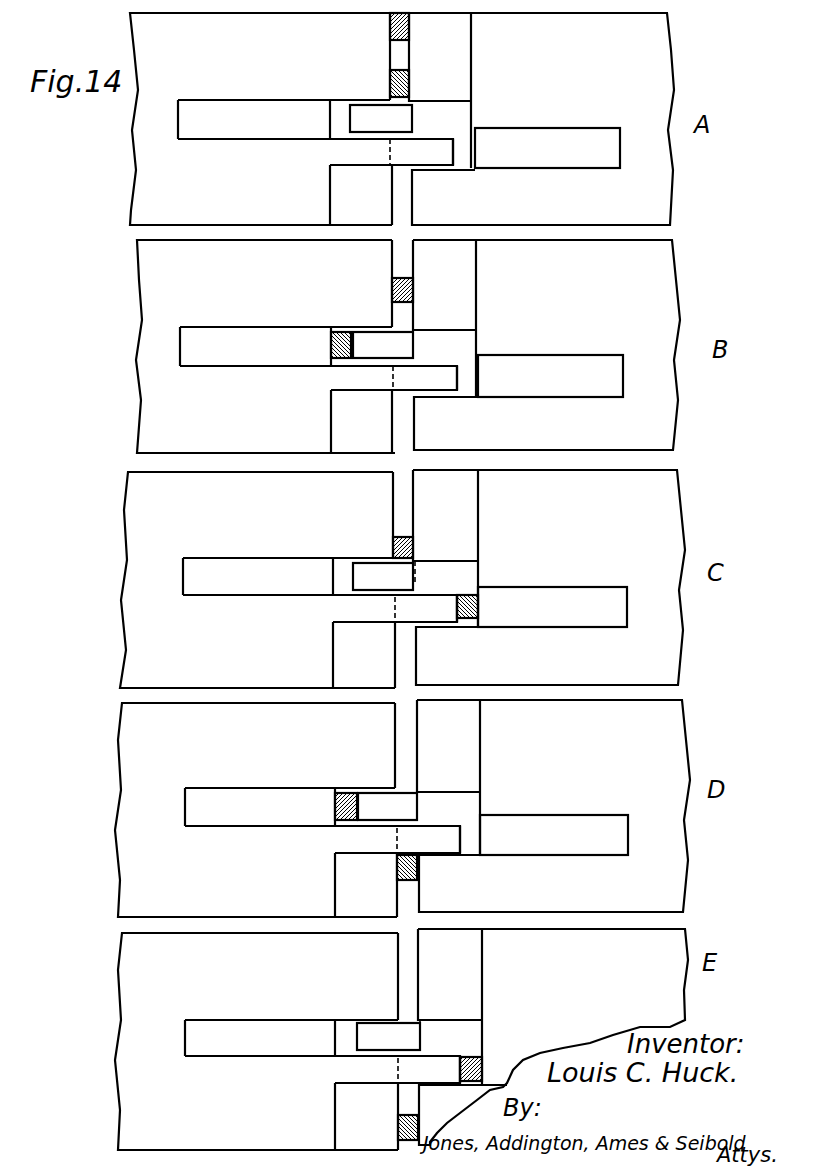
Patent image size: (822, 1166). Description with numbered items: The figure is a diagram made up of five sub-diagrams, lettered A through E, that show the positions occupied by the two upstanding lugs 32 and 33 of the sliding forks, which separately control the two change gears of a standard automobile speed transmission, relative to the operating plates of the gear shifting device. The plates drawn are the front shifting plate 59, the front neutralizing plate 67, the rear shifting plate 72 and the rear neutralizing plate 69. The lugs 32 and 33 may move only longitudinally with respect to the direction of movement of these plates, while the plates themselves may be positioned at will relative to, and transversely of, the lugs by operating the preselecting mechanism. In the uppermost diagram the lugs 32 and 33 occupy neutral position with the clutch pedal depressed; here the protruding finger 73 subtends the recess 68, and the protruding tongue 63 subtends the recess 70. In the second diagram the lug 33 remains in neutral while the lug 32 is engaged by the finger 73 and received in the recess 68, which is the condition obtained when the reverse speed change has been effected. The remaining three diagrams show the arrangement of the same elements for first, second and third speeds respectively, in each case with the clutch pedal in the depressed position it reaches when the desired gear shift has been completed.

The front shifting plate 59 is at (256, 581).
The rear shifting plate 72 is at (549, 579).
The front neutralizing plate 67 is at (288, 625).
The recess 68 is at (343, 1028).
The protruding finger 73 is at (385, 577).
The protruding tongue 63 is at (395, 610).
The rear neutralizing plate 69 is at (518, 549).
The recess 70 is at (490, 1030).
The lug 32 is at (398, 1122).
The lug 33 is at (493, 1062).